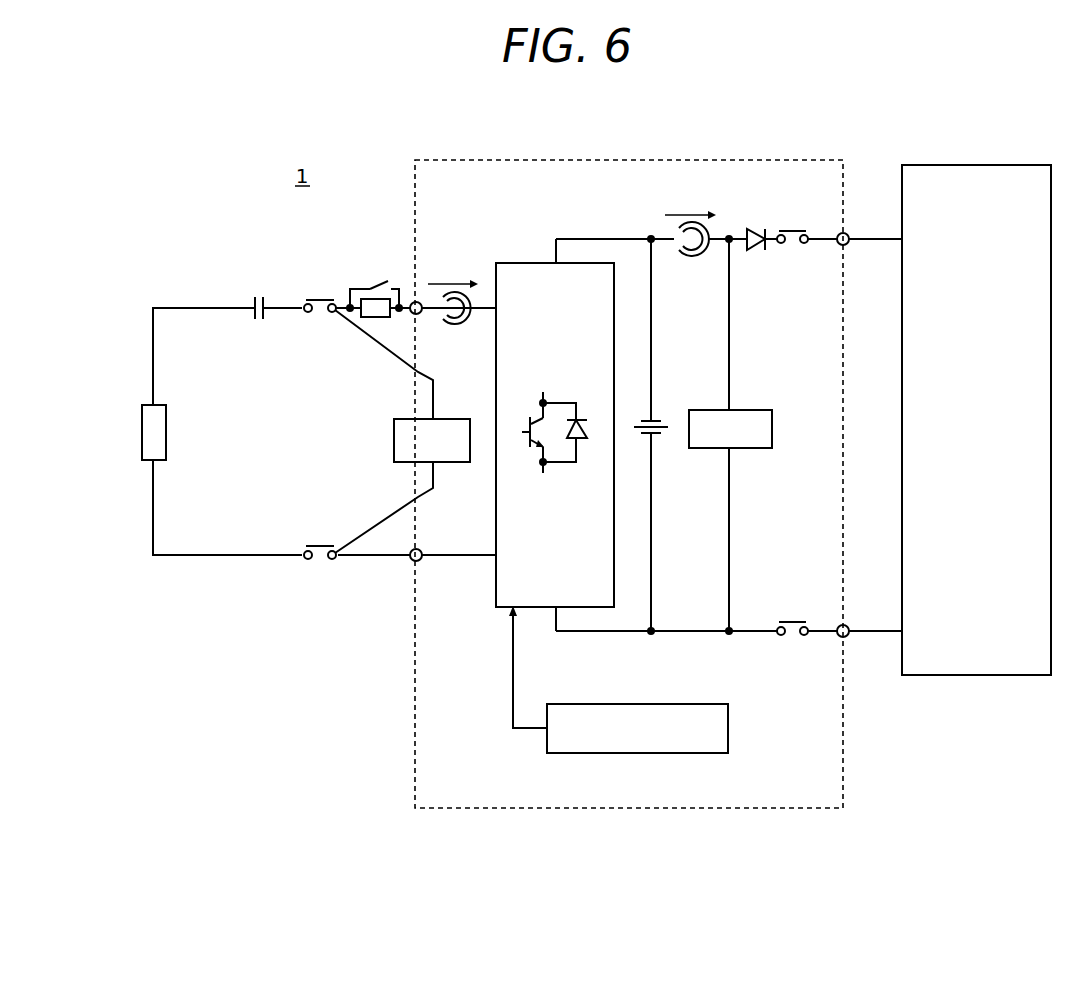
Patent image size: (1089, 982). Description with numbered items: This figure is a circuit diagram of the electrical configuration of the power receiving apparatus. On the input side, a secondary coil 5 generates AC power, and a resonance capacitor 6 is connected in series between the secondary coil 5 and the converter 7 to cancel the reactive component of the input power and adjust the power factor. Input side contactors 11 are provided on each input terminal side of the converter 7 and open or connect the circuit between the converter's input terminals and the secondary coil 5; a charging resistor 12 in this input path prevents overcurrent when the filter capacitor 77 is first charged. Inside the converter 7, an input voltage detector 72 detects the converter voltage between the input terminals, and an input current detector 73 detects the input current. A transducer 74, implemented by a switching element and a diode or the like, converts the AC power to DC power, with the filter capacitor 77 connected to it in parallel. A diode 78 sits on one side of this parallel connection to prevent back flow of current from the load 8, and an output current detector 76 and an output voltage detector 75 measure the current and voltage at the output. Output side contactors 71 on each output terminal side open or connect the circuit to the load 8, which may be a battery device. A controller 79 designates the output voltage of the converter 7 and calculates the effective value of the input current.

The secondary coil 5 is at (166, 433).
The resonance capacitor 6 is at (259, 294).
The converter 7 is at (628, 160).
The load 8 is at (979, 160).
The input side contactors 11 is at (319, 286).
The charging resistor 12 is at (373, 280).
The output side contactors 71 is at (790, 226).
The input voltage detector 72 is at (394, 440).
The input current detector 73 is at (459, 326).
The transducer 74 is at (532, 263).
The output voltage detector 75 is at (772, 430).
The output current detector 76 is at (690, 258).
The filter capacitor 77 is at (664, 418).
The diode 78 is at (754, 252).
The controller 79 is at (728, 728).